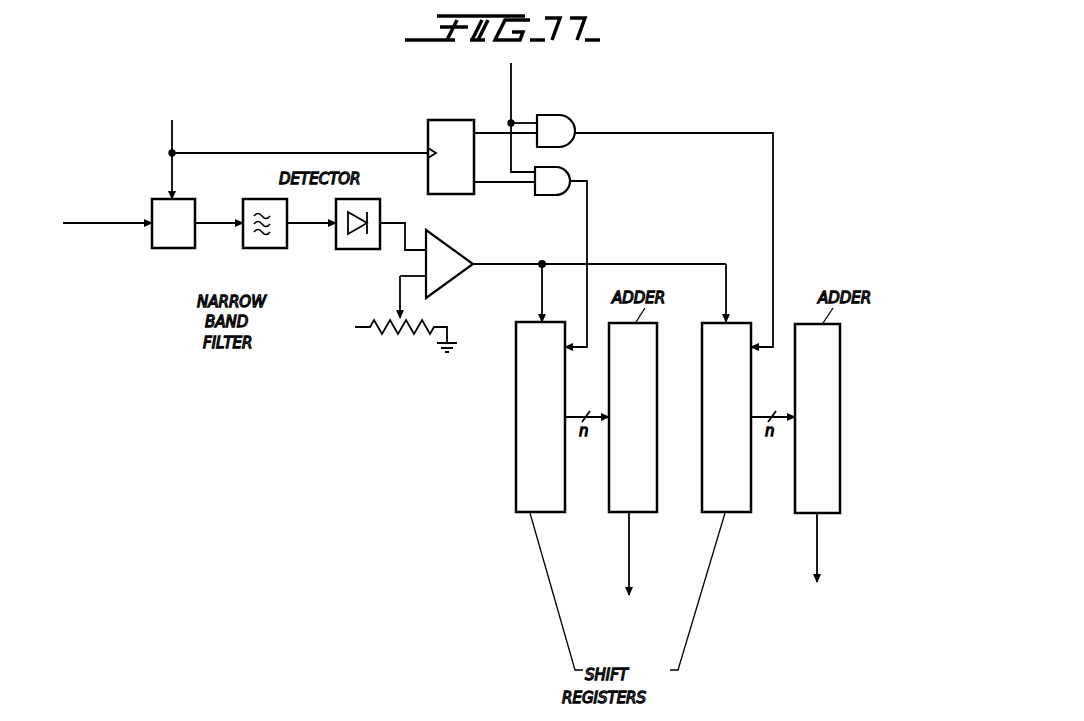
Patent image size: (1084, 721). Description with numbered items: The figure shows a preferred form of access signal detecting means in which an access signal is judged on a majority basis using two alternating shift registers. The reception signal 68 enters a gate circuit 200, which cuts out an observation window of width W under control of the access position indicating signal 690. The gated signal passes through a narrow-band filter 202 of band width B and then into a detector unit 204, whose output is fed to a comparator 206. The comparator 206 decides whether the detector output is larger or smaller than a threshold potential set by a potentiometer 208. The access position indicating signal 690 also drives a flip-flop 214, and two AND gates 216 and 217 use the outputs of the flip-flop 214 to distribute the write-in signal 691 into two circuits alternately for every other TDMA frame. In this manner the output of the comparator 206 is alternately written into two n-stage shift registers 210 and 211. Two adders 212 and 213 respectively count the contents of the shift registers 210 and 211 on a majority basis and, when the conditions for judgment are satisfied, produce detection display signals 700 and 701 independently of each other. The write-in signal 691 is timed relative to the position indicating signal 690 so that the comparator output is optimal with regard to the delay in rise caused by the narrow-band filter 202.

The reception signal 68 is at (98, 218).
The access position indicating signal 690 is at (176, 131).
The gate circuit 200 is at (170, 250).
The narrow-band filter 202 is at (258, 250).
The detector unit 204 is at (370, 183).
The comparator 206 is at (450, 256).
The potentiometer 208 is at (405, 332).
The flip-flop 214 is at (463, 101).
The write-in signal 691 is at (514, 81).
The AND gate 216 is at (572, 118).
The AND gate 217 is at (572, 175).
The n-stage shift register 210 is at (515, 455).
The adder 212 is at (640, 513).
The n-stage shift register 211 is at (733, 513).
The adder 213 is at (843, 448).
The detection display signal 700 is at (629, 549).
The detection display signal 701 is at (818, 562).